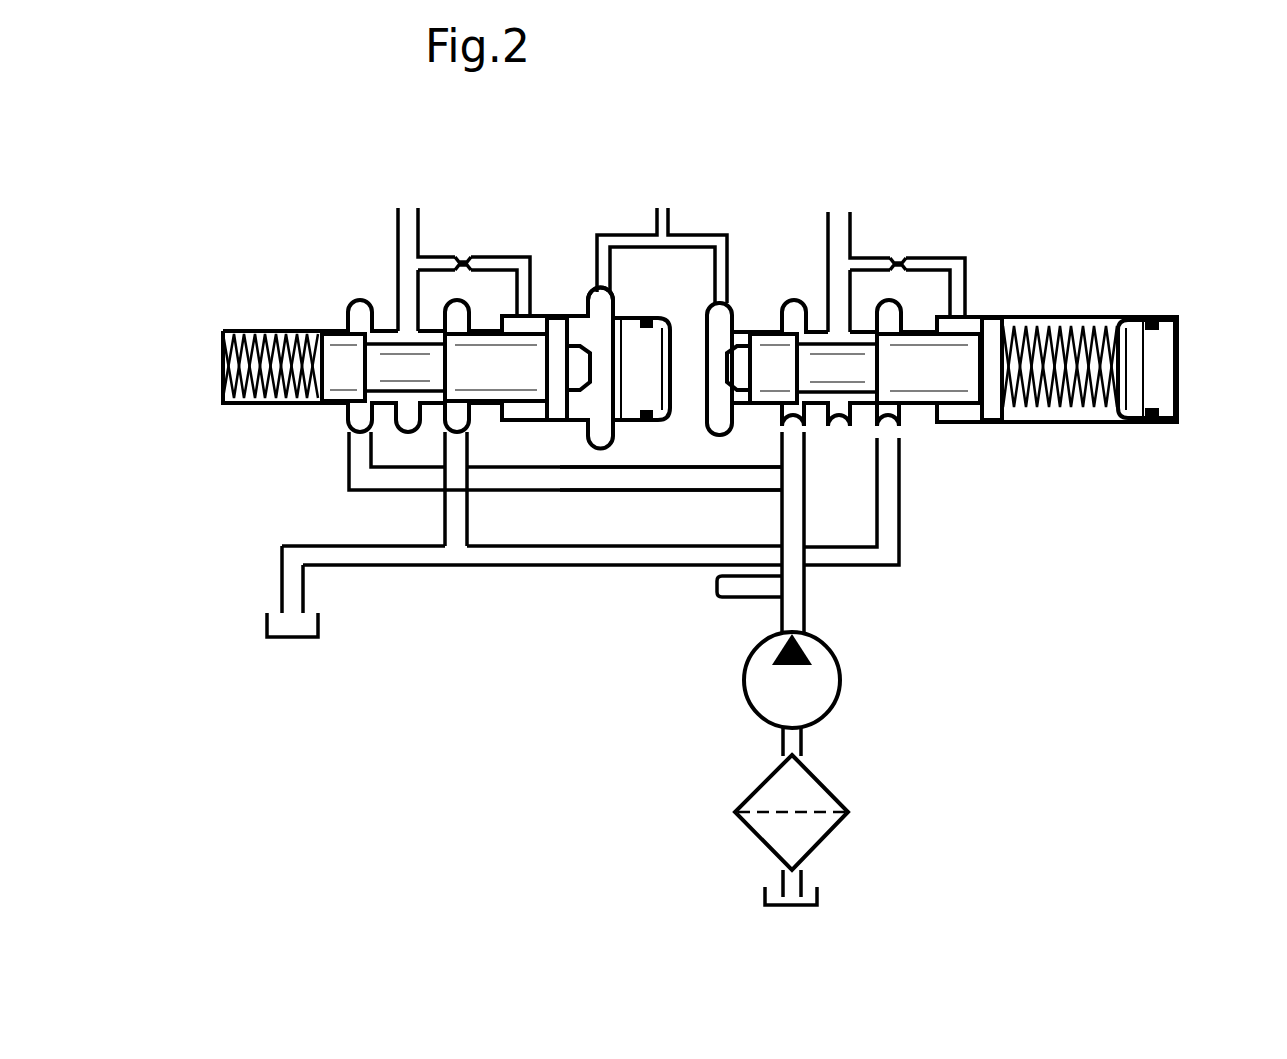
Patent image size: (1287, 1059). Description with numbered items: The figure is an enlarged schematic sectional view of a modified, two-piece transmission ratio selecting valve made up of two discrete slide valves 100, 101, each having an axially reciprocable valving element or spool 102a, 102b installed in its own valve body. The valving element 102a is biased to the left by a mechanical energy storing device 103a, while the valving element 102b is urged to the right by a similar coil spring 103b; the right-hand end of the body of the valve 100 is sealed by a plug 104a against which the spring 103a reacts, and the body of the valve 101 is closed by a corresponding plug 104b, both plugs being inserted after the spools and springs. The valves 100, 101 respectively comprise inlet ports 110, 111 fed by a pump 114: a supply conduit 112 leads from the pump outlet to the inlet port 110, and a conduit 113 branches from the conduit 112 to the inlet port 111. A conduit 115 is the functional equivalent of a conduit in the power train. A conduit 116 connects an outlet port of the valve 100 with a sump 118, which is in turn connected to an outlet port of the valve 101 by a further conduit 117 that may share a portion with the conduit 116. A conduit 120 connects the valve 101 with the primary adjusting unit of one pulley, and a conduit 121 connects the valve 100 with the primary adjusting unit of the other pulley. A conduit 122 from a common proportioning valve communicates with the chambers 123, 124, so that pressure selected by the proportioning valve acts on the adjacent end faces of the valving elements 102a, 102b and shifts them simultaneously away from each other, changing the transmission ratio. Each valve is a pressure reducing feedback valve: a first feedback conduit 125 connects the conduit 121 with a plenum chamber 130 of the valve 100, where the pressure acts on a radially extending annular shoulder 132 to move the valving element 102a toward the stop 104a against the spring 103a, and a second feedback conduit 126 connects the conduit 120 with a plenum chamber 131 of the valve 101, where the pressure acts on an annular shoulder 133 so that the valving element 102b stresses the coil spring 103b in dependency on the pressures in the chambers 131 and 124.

The slide valve 100 is at (1112, 259).
The slide valve 101 is at (262, 310).
The valving element 102a is at (897, 384).
The valving element 102b is at (413, 324).
The mechanical energy storing device 103a is at (1103, 408).
The coil spring 103b is at (230, 400).
The plug 104a is at (1152, 361).
The plug 104b is at (635, 355).
The inlet port 110 is at (810, 428).
The inlet port 111 is at (363, 424).
The supply conduit 112 is at (796, 500).
The conduit 113 is at (600, 482).
The pump 114 is at (818, 693).
The conduit 115 is at (722, 581).
The conduit 116 is at (537, 552).
The conduit 117 is at (388, 555).
The sump 118 is at (290, 638).
The conduit 120 is at (461, 234).
The conduit 121 is at (902, 223).
The conduit 122 is at (663, 205).
The chamber 123 is at (723, 333).
The chamber 124 is at (588, 298).
The first feedback conduit 125 is at (941, 261).
The second feedback conduit 126 is at (496, 259).
The plenum chamber 130 is at (960, 328).
The plenum chamber 131 is at (532, 322).
The annular shoulder 132 is at (983, 325).
The annular shoulder 133 is at (537, 333).